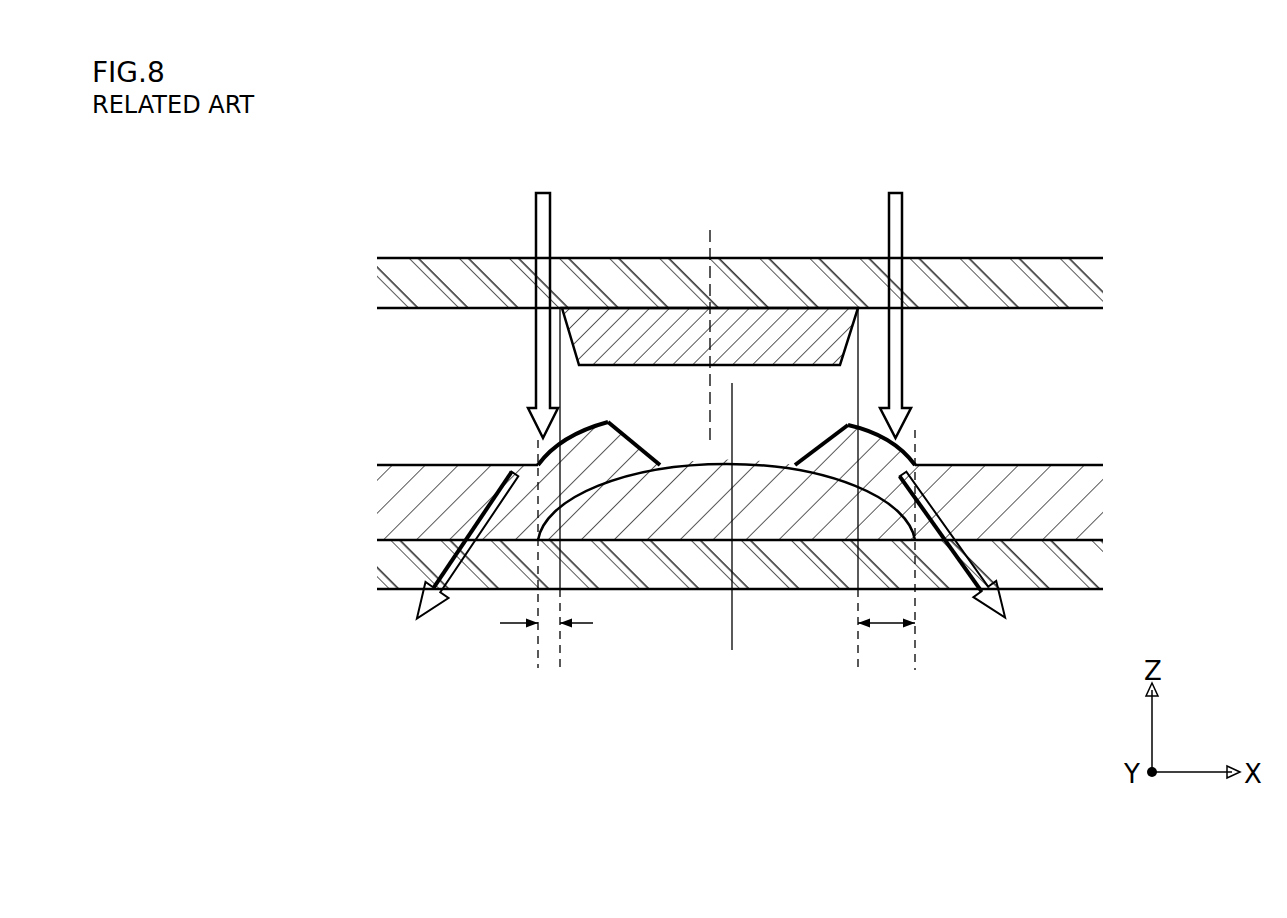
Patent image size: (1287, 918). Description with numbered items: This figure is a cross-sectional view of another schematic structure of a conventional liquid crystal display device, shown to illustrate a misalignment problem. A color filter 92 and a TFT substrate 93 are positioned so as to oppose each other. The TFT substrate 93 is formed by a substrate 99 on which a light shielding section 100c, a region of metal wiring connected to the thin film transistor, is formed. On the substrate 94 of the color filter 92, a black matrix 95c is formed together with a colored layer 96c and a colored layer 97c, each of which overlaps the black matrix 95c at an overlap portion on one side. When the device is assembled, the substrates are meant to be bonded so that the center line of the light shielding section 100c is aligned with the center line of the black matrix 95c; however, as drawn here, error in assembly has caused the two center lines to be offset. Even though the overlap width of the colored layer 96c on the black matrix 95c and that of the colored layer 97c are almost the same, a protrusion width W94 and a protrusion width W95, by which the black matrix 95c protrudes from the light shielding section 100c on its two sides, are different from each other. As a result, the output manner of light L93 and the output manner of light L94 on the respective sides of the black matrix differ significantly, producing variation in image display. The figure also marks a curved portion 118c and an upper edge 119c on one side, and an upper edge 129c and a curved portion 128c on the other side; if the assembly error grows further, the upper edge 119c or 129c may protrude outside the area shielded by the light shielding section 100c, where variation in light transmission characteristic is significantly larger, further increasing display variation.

The TFT substrate 93 is at (408, 258).
The substrate 99 is at (1040, 261).
The light shielding section 100c is at (840, 360).
The color filter 92 is at (407, 463).
The colored layer 96c is at (440, 463).
The colored layer 97c is at (1034, 463).
The left curved portion 118c is at (586, 432).
The upper edge 119c is at (616, 421).
The upper edge 129c is at (845, 424).
The right curved portion 128c is at (910, 449).
The black matrix 95c is at (715, 522).
The substrate 94 is at (1072, 592).
The light L93 is at (438, 616).
The light L94 is at (992, 617).
The protrusion width W94 is at (550, 632).
The protrusion width W95 is at (886, 648).